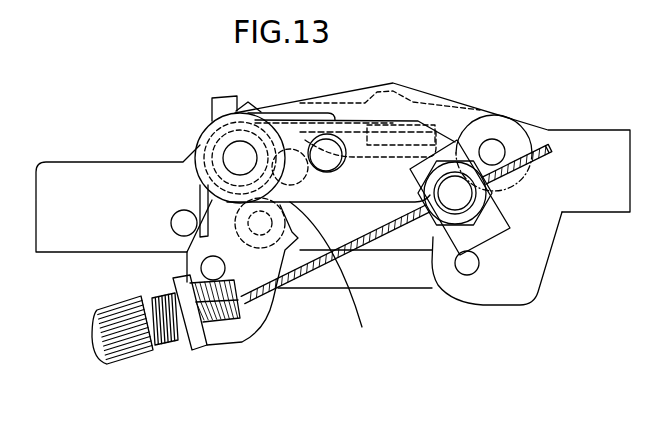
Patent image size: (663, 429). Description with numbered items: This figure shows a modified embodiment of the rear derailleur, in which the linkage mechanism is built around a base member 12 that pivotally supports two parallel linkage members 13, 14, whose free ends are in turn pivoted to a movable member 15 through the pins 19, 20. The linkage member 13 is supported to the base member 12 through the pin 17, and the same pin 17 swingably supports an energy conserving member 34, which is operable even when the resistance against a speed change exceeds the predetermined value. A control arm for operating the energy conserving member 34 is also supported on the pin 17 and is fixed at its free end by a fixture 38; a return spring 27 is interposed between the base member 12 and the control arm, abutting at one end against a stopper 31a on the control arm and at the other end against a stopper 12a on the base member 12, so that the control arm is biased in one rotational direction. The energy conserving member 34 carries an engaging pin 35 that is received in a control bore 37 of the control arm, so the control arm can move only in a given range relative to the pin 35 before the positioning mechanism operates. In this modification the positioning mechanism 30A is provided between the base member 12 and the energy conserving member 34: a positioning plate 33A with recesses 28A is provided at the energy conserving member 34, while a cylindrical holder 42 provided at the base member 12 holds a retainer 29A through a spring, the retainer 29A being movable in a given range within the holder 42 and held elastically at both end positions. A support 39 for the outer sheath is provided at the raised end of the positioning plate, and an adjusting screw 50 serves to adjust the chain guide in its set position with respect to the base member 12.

The base member 12 is at (92, 253).
The stopper 12a is at (173, 229).
The linkage member 13 is at (448, 97).
The linkage member 14 is at (398, 291).
The movable member 15 is at (553, 235).
The pin 17 is at (252, 147).
The pin 19 is at (510, 119).
The pin 20 is at (458, 274).
The return spring 27 is at (212, 118).
The recesses 28A is at (308, 303).
The retainer 29A is at (281, 303).
The positioning mechanism 30A is at (336, 355).
The stopper 31a is at (221, 93).
The positioning plate 33A is at (361, 318).
The energy conserving member 34 is at (357, 92).
The engaging pin 35 is at (321, 138).
The control bore 37 is at (337, 138).
The fixture 38 is at (455, 160).
The support 39 is at (143, 358).
The cylindrical holder 42 is at (252, 333).
The adjusting screw 50 is at (393, 100).